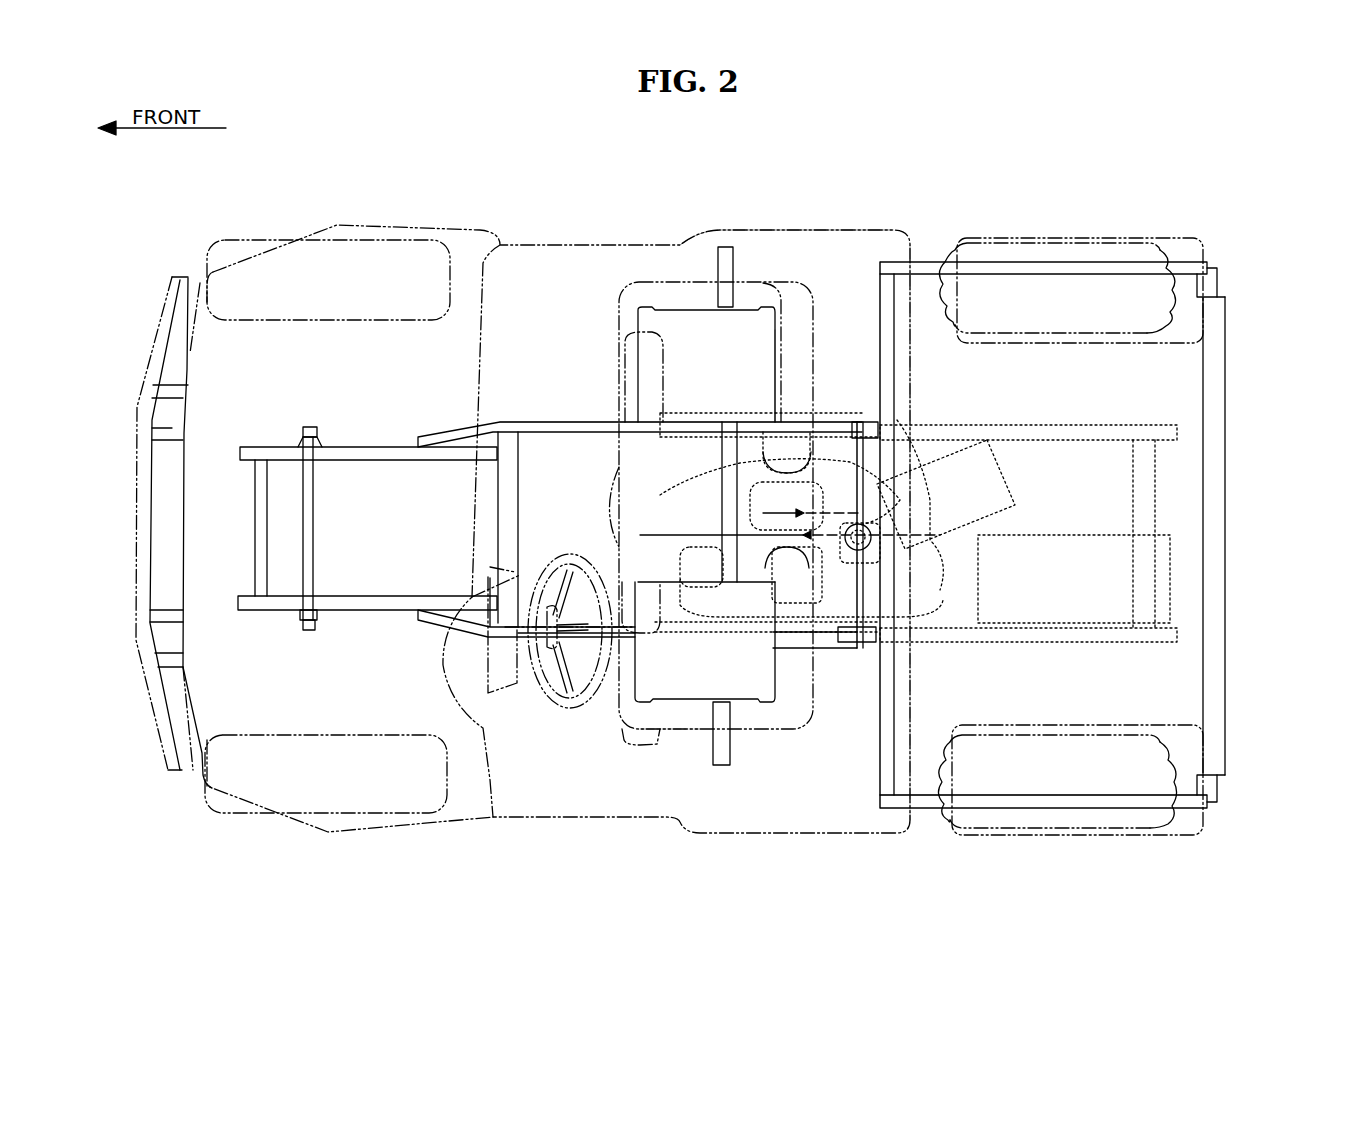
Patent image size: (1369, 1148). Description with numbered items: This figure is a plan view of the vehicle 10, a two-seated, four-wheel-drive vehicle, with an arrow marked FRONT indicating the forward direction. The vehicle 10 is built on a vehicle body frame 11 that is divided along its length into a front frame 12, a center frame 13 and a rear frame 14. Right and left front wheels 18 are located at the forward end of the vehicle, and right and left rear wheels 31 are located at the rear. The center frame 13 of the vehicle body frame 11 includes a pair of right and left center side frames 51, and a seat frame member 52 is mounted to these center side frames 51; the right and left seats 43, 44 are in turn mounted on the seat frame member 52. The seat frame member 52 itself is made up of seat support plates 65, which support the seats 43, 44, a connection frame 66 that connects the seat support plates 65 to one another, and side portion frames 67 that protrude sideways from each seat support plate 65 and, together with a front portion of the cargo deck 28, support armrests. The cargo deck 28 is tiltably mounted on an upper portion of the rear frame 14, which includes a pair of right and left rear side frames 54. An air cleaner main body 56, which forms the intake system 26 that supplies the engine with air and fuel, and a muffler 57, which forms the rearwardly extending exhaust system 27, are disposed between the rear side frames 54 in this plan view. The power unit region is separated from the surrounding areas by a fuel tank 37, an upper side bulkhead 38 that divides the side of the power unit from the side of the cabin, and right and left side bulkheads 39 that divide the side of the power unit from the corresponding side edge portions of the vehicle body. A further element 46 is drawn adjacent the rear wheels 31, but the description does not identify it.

The vehicle 10 is at (180, 258).
The vehicle body frame 11 is at (543, 418).
The front frame 12 is at (337, 611).
The center frame 13 is at (589, 418).
The rear frame 14 is at (1037, 424).
The front wheels 18 is at (372, 224).
The intake system 26 is at (852, 467).
The exhaust system 27 is at (847, 598).
The cargo deck 28 is at (1004, 808).
The rear wheels 31 is at (1005, 245).
The fuel tank 37 is at (632, 730).
The upper side bulkhead 38 is at (867, 467).
The side bulkheads 39 is at (795, 420).
The seat 43 is at (668, 733).
The seat 44 is at (677, 277).
The rear tire 46 is at (1137, 237).
The center side frames 51 is at (607, 432).
The seat frame member 52 is at (664, 303).
The rear side frames 54 is at (1125, 432).
The air cleaner main body 56 is at (1003, 473).
The muffler 57 is at (1170, 592).
The seat support plates 65 is at (747, 323).
The connection frame 66 is at (753, 515).
The side portion frames 67 is at (727, 268).